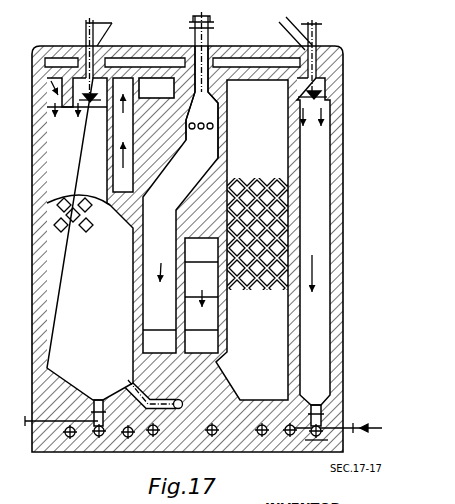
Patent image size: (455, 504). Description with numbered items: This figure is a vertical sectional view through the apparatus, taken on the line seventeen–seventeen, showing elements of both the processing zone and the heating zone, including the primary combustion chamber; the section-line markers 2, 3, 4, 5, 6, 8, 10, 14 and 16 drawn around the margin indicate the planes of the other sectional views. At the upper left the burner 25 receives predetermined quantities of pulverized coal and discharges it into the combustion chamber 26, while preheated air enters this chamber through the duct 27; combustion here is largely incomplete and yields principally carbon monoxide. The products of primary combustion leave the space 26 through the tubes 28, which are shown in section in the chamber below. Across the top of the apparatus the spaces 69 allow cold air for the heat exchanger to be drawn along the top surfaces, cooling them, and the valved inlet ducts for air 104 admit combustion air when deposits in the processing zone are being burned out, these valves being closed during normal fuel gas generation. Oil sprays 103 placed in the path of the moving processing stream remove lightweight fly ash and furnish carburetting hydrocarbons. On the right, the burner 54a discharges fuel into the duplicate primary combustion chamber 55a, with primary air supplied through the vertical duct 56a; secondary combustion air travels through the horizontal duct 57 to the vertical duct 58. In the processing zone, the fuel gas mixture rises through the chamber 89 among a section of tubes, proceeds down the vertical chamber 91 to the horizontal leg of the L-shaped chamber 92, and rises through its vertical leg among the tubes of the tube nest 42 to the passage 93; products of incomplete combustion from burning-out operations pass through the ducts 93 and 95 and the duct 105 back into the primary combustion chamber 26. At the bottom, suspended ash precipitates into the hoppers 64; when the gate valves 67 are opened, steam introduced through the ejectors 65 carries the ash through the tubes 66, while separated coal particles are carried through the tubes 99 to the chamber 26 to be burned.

The duct 105 is at (33, 62).
The burner 25 is at (86, 36).
The duct 27 is at (98, 50).
The spaces 69 is at (148, 62).
The valved inlet ducts for air 104 is at (210, 45).
The burner 54a is at (318, 45).
The vertical duct 56a is at (342, 65).
The passage 93 is at (156, 88).
The duct 95 is at (123, 135).
The combustion chamber 26 is at (90, 239).
The oil sprays 103 is at (187, 130).
The vertical chamber 91 is at (160, 217).
The vertical duct 58 is at (252, 240).
The tube nest 42 is at (275, 182).
The primary combustion chamber 55a is at (313, 241).
The tubes 28 is at (91, 236).
The L-shaped chamber 92 is at (159, 324).
The chamber 89 is at (201, 295).
The tubes 99 is at (153, 394).
The horizontal duct 57 is at (226, 387).
The gate valves 67 is at (203, 420).
The hoppers 64 is at (206, 410).
The tubes 66 is at (102, 436).
The ejectors 65 is at (310, 441).
The section line 2- 2 is at (20, 79).
The section line 3- 3 is at (20, 116).
The section line 4- 4 is at (20, 344).
The section line 5- 5 is at (20, 381).
The section line 6- 6 is at (68, 17).
The section line 8- 8 is at (261, 17).
The section line 10- 10 is at (318, 17).
The section line 14- 14 is at (117, 17).
The section line 16- 16 is at (196, 17).